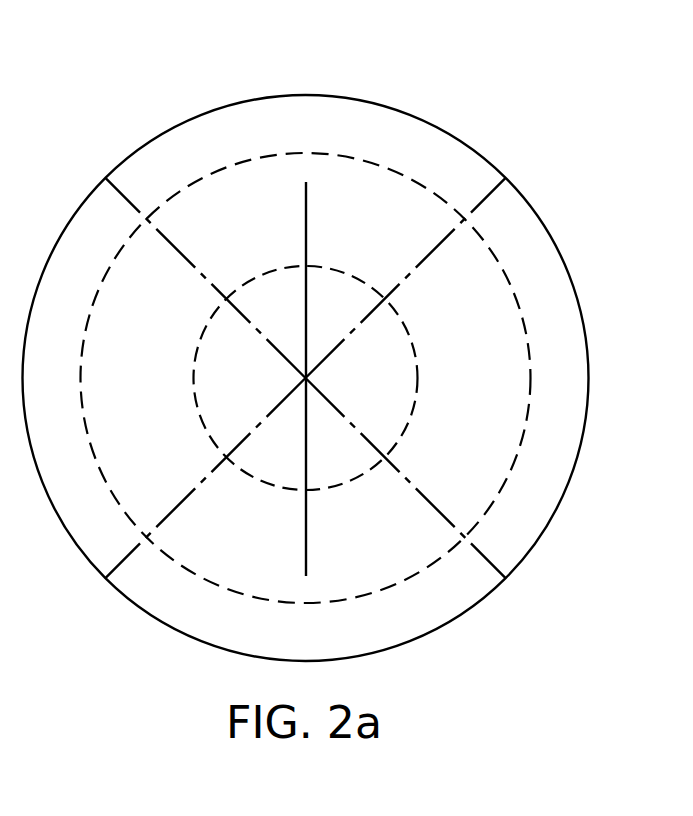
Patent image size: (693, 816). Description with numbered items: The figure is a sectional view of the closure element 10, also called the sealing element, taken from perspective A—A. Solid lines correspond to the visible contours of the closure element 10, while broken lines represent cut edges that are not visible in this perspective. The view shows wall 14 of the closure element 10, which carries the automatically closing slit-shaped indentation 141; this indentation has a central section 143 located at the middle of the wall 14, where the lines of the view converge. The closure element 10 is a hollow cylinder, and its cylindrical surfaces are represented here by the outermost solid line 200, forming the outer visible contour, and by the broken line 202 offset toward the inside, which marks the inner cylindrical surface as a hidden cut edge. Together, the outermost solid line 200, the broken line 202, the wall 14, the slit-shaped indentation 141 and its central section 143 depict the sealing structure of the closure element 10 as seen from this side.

The closure element 10 is at (163, 119).
The outermost solid line 200 is at (537, 543).
The broken line 202 is at (418, 181).
The wall 14 is at (490, 268).
The slit-shaped indentation 141 is at (306, 202).
The central section 143 is at (308, 378).